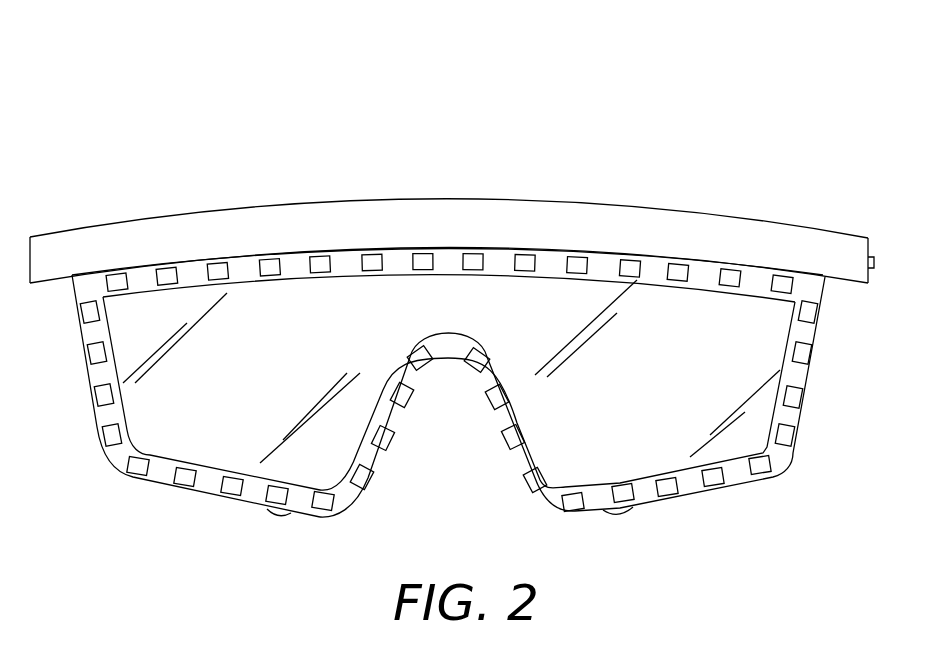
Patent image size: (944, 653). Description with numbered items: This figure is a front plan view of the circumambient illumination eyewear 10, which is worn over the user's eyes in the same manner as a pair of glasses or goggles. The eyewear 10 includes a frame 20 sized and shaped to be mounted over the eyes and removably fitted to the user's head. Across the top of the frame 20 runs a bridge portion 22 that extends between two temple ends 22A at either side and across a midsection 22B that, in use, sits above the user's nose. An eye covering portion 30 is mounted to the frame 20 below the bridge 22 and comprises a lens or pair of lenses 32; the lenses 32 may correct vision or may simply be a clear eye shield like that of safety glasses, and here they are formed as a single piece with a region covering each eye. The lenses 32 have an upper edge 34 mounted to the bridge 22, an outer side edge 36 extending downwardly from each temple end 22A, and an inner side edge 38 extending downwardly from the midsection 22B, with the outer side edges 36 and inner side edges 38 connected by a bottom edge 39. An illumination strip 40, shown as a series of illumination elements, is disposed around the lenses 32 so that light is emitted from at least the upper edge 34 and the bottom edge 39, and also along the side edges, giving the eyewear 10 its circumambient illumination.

The circumambient illumination eyewear 10 is at (178, 113).
The frame 20 is at (577, 162).
The bridge portion 22 is at (242, 210).
The temple ends 22A is at (57, 232).
The midsection 22B is at (453, 203).
The eye covering portion 30 is at (305, 565).
The lens 32 is at (208, 397).
The upper edge 34 is at (247, 275).
The outer side edge 36 is at (117, 368).
The inner side edge 38 is at (367, 368).
The bottom edge 39 is at (257, 465).
The illumination strip 40 is at (112, 437).